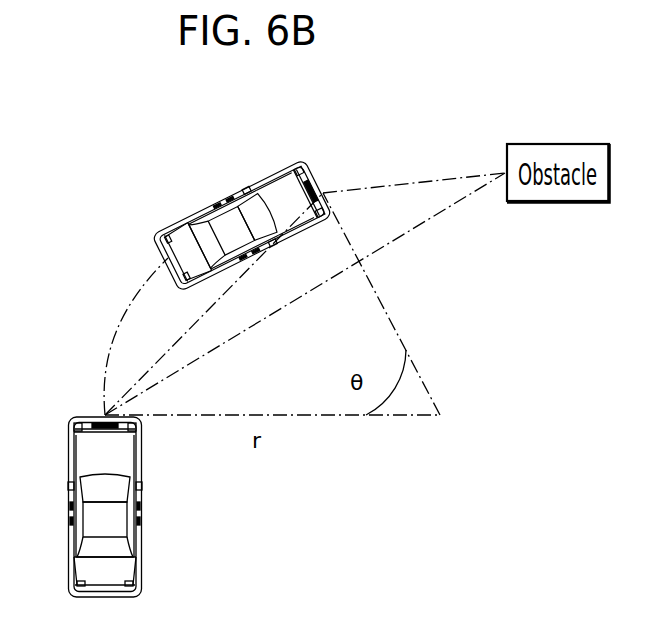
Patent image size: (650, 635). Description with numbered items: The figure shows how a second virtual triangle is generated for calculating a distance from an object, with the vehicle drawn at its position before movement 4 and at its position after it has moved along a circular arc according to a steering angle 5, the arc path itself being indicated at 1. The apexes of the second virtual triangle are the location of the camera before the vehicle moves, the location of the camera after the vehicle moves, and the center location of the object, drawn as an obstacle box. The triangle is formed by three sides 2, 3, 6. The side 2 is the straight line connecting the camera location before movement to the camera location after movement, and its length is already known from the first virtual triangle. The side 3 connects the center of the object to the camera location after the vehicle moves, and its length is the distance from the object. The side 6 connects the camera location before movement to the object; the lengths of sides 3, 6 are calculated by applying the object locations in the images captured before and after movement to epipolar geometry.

The curved travel path of host vehicle to other vehicle 1 is at (129, 336).
The side of the second virtual triangle 2 is at (214, 304).
The side of the second virtual triangle 3 is at (414, 174).
The host vehicle 4 is at (86, 507).
The other vehicle 5 is at (166, 146).
The side of the second virtual triangle 6 is at (305, 294).